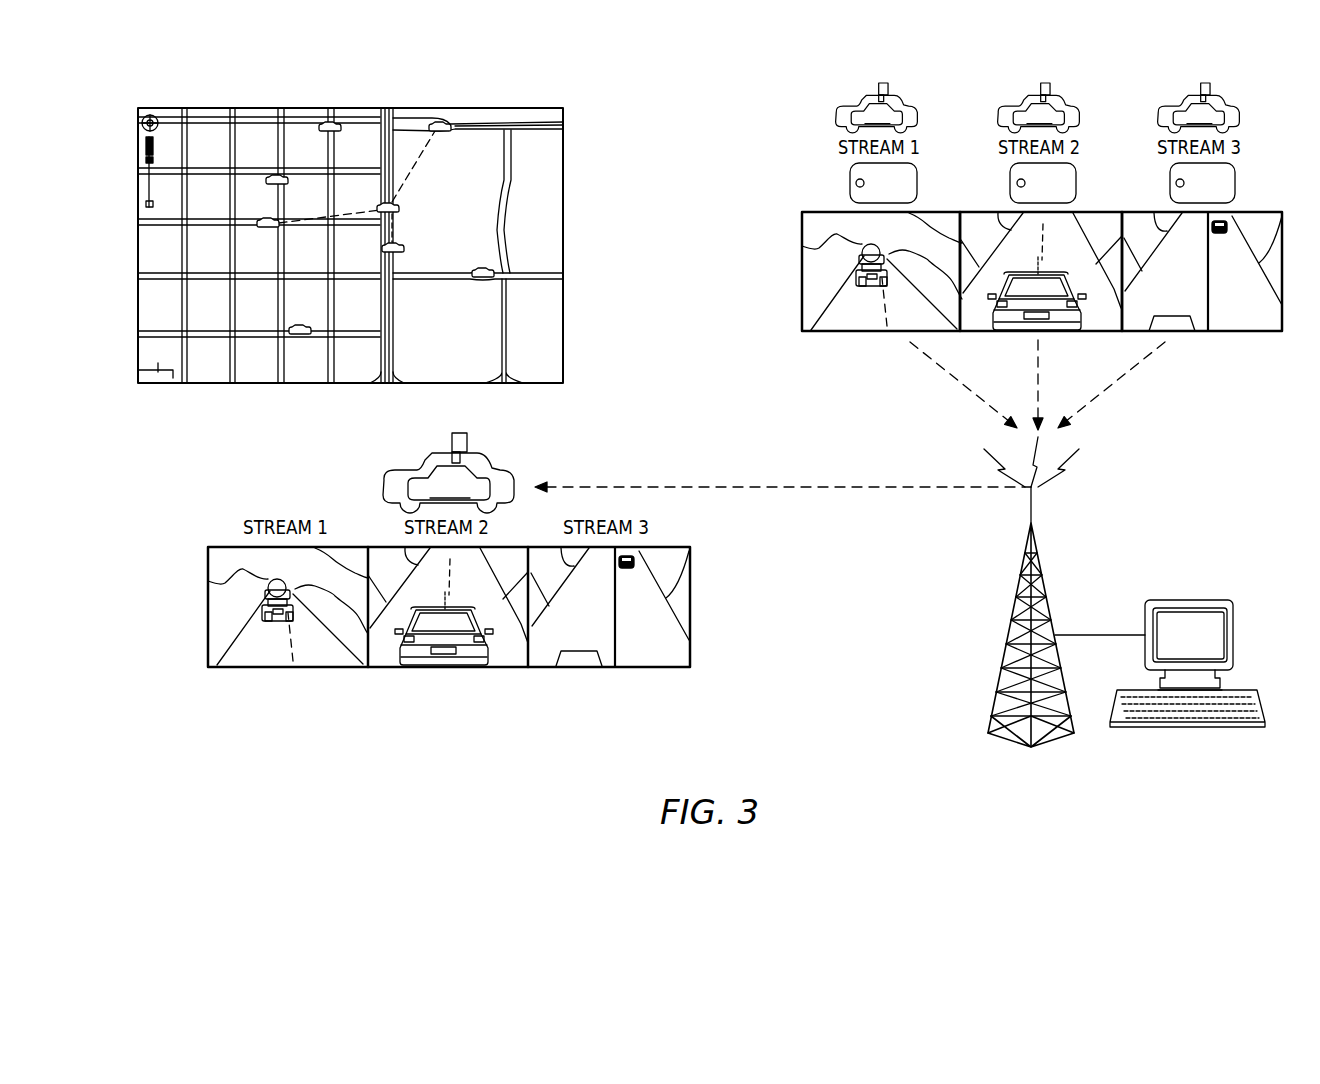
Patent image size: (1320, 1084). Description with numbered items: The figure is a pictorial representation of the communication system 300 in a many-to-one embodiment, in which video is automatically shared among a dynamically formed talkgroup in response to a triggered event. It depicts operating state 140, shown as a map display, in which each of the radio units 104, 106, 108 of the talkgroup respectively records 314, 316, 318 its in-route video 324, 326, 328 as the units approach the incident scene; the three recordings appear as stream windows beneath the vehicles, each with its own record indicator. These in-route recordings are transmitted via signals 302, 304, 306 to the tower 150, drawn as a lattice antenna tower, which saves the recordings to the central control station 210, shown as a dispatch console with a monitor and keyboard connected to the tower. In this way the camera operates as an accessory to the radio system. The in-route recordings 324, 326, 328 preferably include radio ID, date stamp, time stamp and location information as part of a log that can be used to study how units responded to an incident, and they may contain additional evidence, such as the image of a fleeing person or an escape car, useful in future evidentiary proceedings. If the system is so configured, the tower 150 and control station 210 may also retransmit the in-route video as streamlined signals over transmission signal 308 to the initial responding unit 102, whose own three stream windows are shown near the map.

The initial responding unit 102 is at (405, 470).
The radio unit 104 is at (852, 105).
The radio unit 106 is at (1012, 105).
The radio unit 108 is at (1172, 105).
The operating state 140 is at (560, 409).
The tower 150 is at (1040, 546).
The central control station 210 is at (1228, 692).
The system 300 is at (1133, 616).
The signal 302 is at (778, 486).
The signal 304 is at (960, 382).
The signal 306 is at (1040, 383).
The transmission signal 308 is at (1122, 382).
The recording 314 is at (850, 185).
The recording 316 is at (1010, 185).
The recording 318 is at (1170, 185).
The in-route video recording 324 is at (843, 332).
The in-route video recording 326 is at (1002, 332).
The in-route video recording 328 is at (1253, 332).